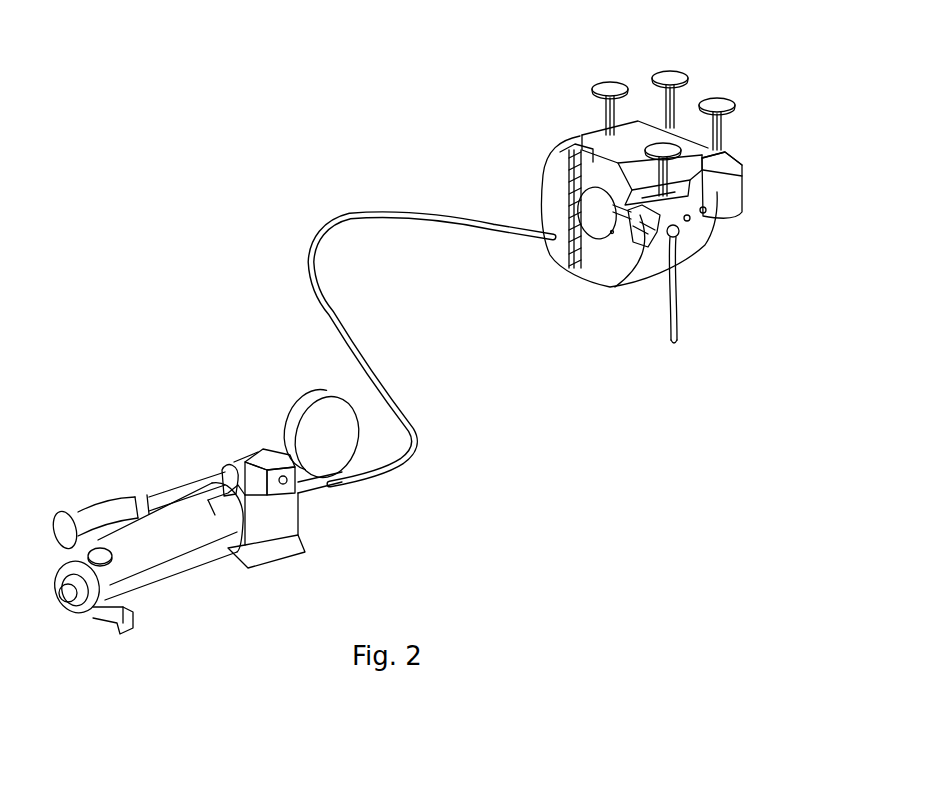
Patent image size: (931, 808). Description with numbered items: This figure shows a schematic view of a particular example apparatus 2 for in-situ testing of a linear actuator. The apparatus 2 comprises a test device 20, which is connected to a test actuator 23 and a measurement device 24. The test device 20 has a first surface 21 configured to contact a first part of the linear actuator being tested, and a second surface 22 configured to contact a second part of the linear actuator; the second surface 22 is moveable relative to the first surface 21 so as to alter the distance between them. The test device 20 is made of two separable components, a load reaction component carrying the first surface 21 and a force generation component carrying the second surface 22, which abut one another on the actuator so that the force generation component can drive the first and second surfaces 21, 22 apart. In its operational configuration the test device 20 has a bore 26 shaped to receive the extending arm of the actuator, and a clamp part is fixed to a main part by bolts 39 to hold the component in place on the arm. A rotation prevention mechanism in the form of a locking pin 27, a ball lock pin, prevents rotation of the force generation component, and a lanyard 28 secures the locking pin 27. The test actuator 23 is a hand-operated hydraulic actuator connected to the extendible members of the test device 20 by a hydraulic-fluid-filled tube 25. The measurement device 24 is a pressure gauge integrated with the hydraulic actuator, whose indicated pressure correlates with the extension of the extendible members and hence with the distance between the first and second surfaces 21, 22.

The apparatus 2 is at (602, 499).
The test device 20 is at (508, 137).
The first surface 21 is at (600, 273).
The second surface 22 is at (744, 183).
The test actuator 23 is at (196, 386).
The measurement device 24 is at (320, 420).
The hydraulic-fluid-filled tube 25 is at (323, 233).
The bore 26 is at (596, 222).
The locking pin 27 is at (655, 232).
The lanyard 28 is at (676, 298).
The bolts 39 is at (668, 73).